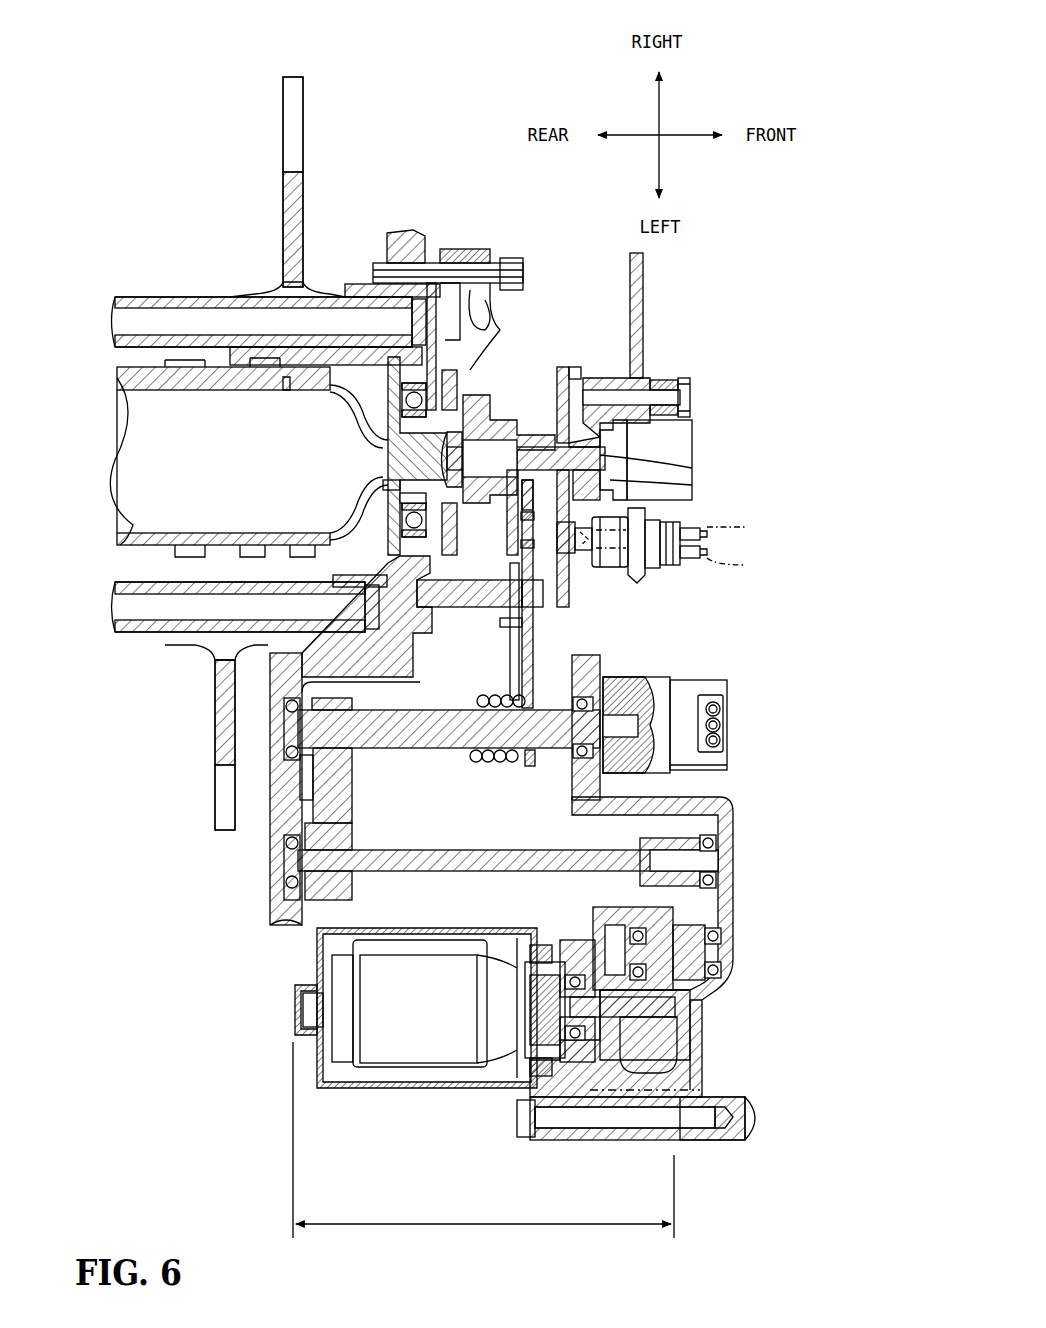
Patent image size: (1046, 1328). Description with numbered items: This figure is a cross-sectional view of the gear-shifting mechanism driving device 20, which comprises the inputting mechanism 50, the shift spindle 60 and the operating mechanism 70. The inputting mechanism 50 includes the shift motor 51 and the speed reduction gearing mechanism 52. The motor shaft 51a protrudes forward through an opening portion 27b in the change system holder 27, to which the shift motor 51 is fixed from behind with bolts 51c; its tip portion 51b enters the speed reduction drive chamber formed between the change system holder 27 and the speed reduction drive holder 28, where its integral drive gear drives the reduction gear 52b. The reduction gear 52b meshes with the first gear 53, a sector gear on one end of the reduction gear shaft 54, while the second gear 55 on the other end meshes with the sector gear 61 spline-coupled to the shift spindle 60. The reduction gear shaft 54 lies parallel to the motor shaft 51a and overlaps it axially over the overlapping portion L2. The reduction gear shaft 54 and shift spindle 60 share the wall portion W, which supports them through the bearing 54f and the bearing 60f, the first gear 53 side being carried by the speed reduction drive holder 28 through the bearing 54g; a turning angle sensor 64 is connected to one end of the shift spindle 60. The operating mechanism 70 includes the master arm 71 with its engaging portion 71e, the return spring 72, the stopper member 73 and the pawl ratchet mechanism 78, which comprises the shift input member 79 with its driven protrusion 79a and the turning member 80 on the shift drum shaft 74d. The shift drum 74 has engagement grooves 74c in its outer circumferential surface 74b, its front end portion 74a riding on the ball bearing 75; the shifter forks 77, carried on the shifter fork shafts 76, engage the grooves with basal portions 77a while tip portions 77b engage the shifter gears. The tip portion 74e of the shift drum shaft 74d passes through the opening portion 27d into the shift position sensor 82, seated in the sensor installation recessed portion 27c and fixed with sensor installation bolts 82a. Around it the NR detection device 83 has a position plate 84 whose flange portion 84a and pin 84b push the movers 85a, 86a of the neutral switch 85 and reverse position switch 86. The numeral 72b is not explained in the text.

The gear-shifting mechanism driving device 20 is at (692, 296).
The change system holder 27 is at (643, 330).
The opening portion 27b is at (625, 1020).
The sensor installation recessed portion 27c is at (695, 484).
The opening portion 27d is at (700, 455).
The speed reduction drive holder 28 is at (688, 1138).
The inputting mechanism 50 is at (725, 1065).
The shift motor 51 is at (430, 1040).
The motor shaft 51a is at (520, 1030).
The tip portion 51b is at (690, 1030).
The bolts 51c is at (558, 1117).
The speed reduction gearing mechanism 52 is at (688, 995).
The reduction gear 52b is at (705, 954).
The first gear 53 is at (705, 913).
The reduction gear shaft 54 is at (470, 850).
The bearing 54f is at (284, 878).
The bearing 54g is at (718, 878).
The second gear 55 is at (352, 832).
The shift spindle 60 is at (428, 748).
The bearing 60f is at (284, 705).
The sector gear 61 is at (352, 790).
The turning angle sensor 64 is at (727, 683).
The operating mechanism 70 is at (562, 605).
The master arm 71 is at (535, 628).
The engaging portion 71e is at (508, 628).
The return spring 72 is at (487, 765).
The spring guide rod 72b is at (509, 680).
The stopper member 73 is at (487, 607).
The shift drum 74 is at (246, 396).
The front end portion 74a is at (388, 482).
The outer circumferential surface 74b is at (125, 543).
The engagement grooves 74c is at (218, 362).
The shift drum shaft 74d is at (395, 460).
The tip portion 74e is at (600, 458).
The ball bearing 75 is at (402, 400).
The shifter fork shafts 76 is at (145, 330).
The shifter forks 77 is at (285, 205).
The basal portions 77a is at (283, 392).
The tip portions 77b is at (293, 120).
The pawl ratchet mechanism 78 is at (518, 412).
The shift input member 79 is at (533, 512).
The driven protrusion 79a is at (541, 514).
The turning member 80 is at (452, 508).
The shift position sensor 82 is at (693, 428).
The sensor installation bolts 82a is at (685, 393).
The NR detection device 83 is at (712, 545).
The position plate 84 is at (557, 400).
The flange portion 84a is at (576, 370).
The pin 84b is at (570, 553).
The neutral switch 85 is at (744, 527).
The mover 85a is at (611, 552).
The reverse position switch 86 is at (745, 565).
The mover 86a is at (599, 569).
The wall portion W is at (270, 911).
The overlapping portion L2 is at (483, 1140).